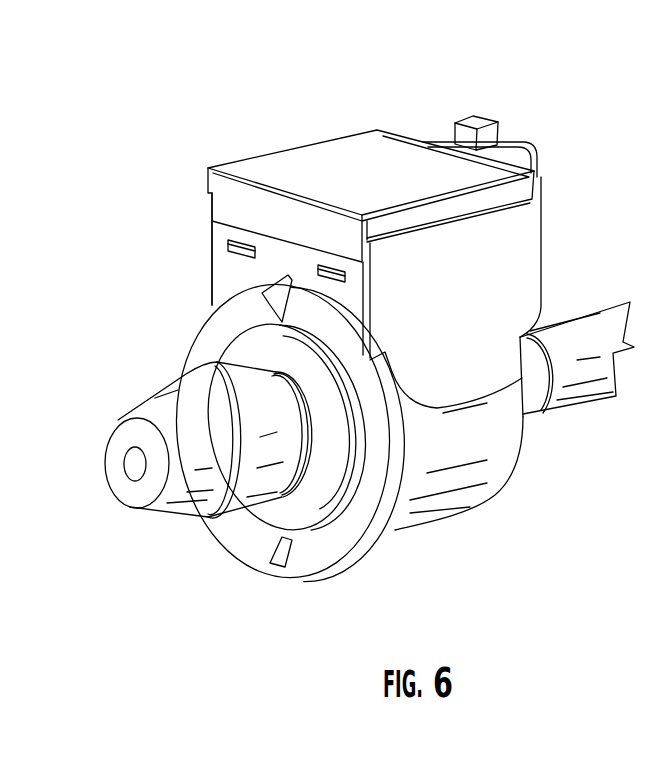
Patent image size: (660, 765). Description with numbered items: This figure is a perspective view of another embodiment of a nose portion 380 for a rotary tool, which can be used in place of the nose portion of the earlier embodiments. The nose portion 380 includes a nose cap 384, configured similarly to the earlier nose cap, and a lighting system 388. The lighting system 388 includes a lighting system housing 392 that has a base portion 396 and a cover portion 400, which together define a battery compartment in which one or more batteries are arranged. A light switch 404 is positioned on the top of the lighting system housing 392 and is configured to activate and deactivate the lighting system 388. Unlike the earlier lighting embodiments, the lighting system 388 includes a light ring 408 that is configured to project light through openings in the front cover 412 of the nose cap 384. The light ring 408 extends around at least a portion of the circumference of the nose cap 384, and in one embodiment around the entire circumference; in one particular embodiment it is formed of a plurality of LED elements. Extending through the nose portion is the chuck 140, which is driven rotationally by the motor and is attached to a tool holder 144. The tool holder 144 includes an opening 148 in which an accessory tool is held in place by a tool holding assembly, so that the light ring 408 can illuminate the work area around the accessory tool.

The nose portion 380 is at (133, 170).
The lighting system 388 is at (144, 284).
The cover portion 400 is at (348, 155).
The light switch 404 is at (485, 118).
The lighting system housing 392 is at (566, 158).
The base portion 396 is at (522, 247).
The chuck 140 is at (583, 373).
The nose cap 384 is at (447, 500).
The front cover 412 is at (250, 540).
The light ring 408 is at (287, 567).
The tool holder 144 is at (200, 480).
The opening 148 is at (133, 465).